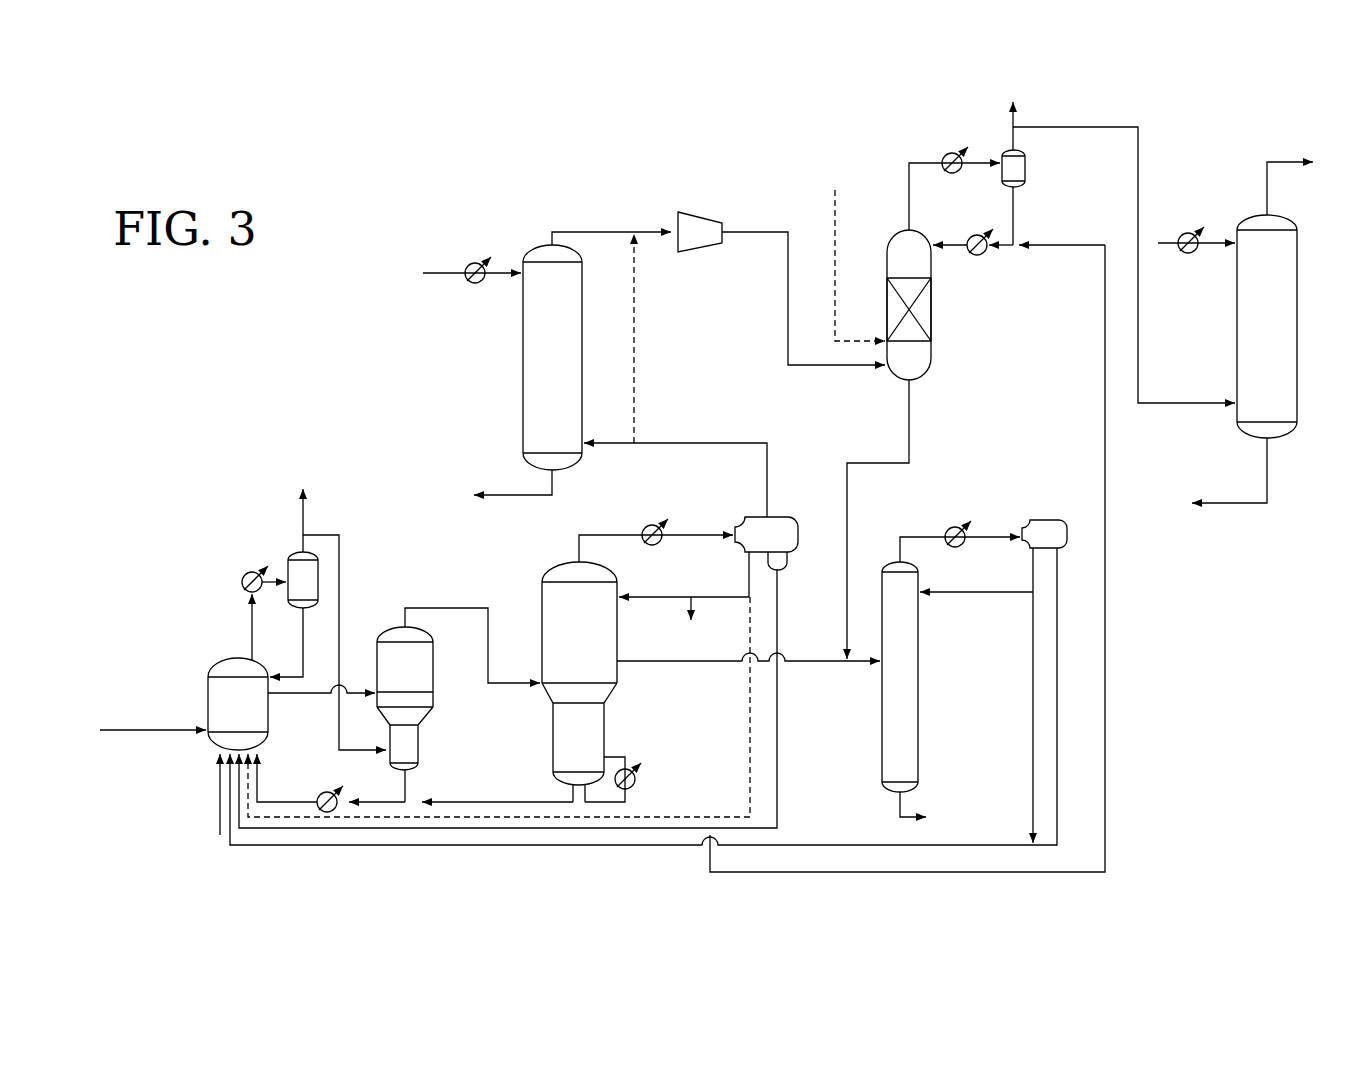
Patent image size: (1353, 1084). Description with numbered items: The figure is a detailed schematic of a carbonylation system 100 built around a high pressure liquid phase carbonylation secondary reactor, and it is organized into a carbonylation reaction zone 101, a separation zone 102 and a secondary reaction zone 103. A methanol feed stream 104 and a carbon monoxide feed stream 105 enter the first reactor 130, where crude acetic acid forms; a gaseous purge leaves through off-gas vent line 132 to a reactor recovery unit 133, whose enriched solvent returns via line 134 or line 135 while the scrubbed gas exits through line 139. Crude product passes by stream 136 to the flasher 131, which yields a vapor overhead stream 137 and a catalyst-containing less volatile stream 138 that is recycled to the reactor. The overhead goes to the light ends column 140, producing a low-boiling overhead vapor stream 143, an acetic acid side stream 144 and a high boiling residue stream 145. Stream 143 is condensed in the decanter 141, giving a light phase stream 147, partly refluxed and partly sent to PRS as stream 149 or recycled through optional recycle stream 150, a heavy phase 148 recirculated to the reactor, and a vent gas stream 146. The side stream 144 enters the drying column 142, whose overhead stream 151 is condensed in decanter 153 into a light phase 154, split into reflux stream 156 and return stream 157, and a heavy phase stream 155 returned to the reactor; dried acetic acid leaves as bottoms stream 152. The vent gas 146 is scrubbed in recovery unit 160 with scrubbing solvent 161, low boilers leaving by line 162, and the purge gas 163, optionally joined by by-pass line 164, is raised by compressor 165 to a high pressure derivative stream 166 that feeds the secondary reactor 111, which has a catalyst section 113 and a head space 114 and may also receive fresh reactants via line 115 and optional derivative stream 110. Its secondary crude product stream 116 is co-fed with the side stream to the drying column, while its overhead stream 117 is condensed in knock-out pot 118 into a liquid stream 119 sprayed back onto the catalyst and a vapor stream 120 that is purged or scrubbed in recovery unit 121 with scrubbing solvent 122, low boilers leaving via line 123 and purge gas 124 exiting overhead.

The carbonylation system 100 is at (336, 224).
The carbonylation reaction zone 101 is at (366, 862).
The separation zone 102 is at (962, 880).
The secondary reaction zone 103 is at (824, 150).
The methanol feed stream 104 is at (153, 735).
The carbon monoxide feed stream 105 is at (218, 795).
The optional derivative stream 110 is at (1103, 382).
The secondary reactor 111 is at (933, 348).
The catalyst section 113 is at (922, 307).
The head space 114 is at (913, 363).
The fresh reactant line 115 is at (833, 302).
The secondary crude product stream 116 is at (911, 437).
The overhead stream 117 is at (908, 160).
The knock-out pot 118 is at (1017, 166).
The liquid stream 119 is at (1010, 205).
The vapor stream 120 is at (1080, 127).
The recovery unit 121 is at (1277, 305).
The scrubbing solvent 122 is at (1163, 243).
The low boiling component removal line 123 is at (1215, 502).
The purge gas 124 is at (1265, 170).
The first reactor 130 is at (258, 718).
The flasher 131 is at (420, 670).
The off-gas vent line 132 is at (251, 628).
The reactor recovery unit 133 is at (297, 552).
The scrubber return line 134 is at (302, 660).
The line to flasher 135 is at (327, 533).
The crude product stream 136 is at (288, 697).
The vapor overhead stream 137 is at (453, 608).
The less volatile stream 138 is at (407, 786).
The recovery unit exit line 139 is at (300, 510).
The light ends column 140 is at (598, 672).
The decanter 141 is at (775, 530).
The drying column 142 is at (903, 722).
The low-boiling overhead vapor stream 143 is at (598, 530).
The side stream 144 is at (690, 665).
The high boiling residue stream 145 is at (515, 798).
The vent gas stream 146 is at (700, 445).
The light phase stream 147 is at (745, 575).
The heavy phase 148 is at (779, 628).
The PRS stream 149 is at (688, 603).
The optional recycle stream 150 is at (748, 762).
The drying column overhead stream 151 is at (917, 530).
The bottoms stream 152 is at (898, 806).
The decanter 153 is at (1043, 530).
The light phase 154 is at (1033, 573).
The heavy phase stream 155 is at (1058, 688).
The reflux stream 156 is at (997, 594).
The light phase return stream 157 is at (1033, 718).
The recovery unit 160 is at (540, 369).
The scrubbing solvent 161 is at (440, 276).
The low boiling component removal line 162 is at (503, 490).
The purge gas 163 is at (588, 230).
The by-pass line 164 is at (636, 353).
The compressor 165 is at (698, 222).
The high pressure derivative stream 166 is at (760, 230).